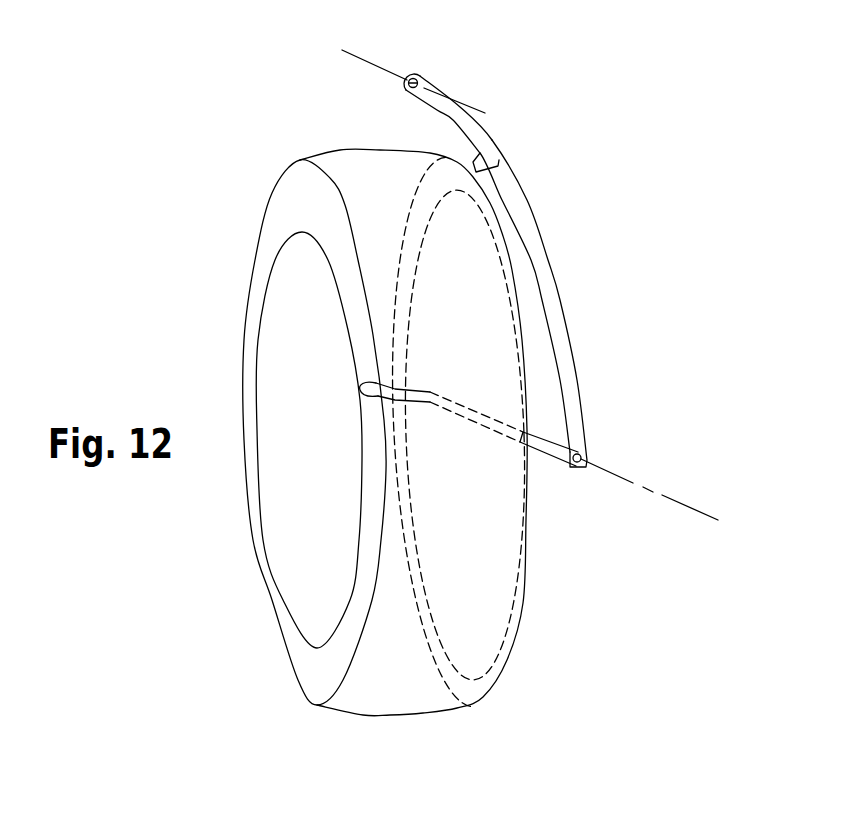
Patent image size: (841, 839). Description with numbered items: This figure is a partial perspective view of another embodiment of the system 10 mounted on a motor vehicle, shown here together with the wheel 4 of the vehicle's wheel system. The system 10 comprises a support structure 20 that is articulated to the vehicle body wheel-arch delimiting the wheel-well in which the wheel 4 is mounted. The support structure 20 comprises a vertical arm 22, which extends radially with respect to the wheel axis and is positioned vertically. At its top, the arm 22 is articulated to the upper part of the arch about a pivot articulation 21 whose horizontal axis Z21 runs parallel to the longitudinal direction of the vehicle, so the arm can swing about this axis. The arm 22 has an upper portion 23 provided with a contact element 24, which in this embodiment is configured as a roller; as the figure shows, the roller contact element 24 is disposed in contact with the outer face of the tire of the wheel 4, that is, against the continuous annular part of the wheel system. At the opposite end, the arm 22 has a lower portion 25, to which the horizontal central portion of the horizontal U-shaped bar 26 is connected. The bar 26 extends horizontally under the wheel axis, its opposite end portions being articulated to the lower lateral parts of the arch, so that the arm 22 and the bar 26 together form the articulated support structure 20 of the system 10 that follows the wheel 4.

The wheel 4 is at (392, 705).
The system 10 is at (658, 147).
The support structure 20 is at (623, 281).
The pivot articulation 21 is at (435, 62).
The horizontal axis Z21 is at (394, 71).
The vertical arm 22 is at (454, 239).
The upper portion 23 is at (537, 145).
The contact element 24 is at (470, 162).
The lower portion 25 is at (542, 449).
The horizontal U-shaped bar 26 is at (549, 436).